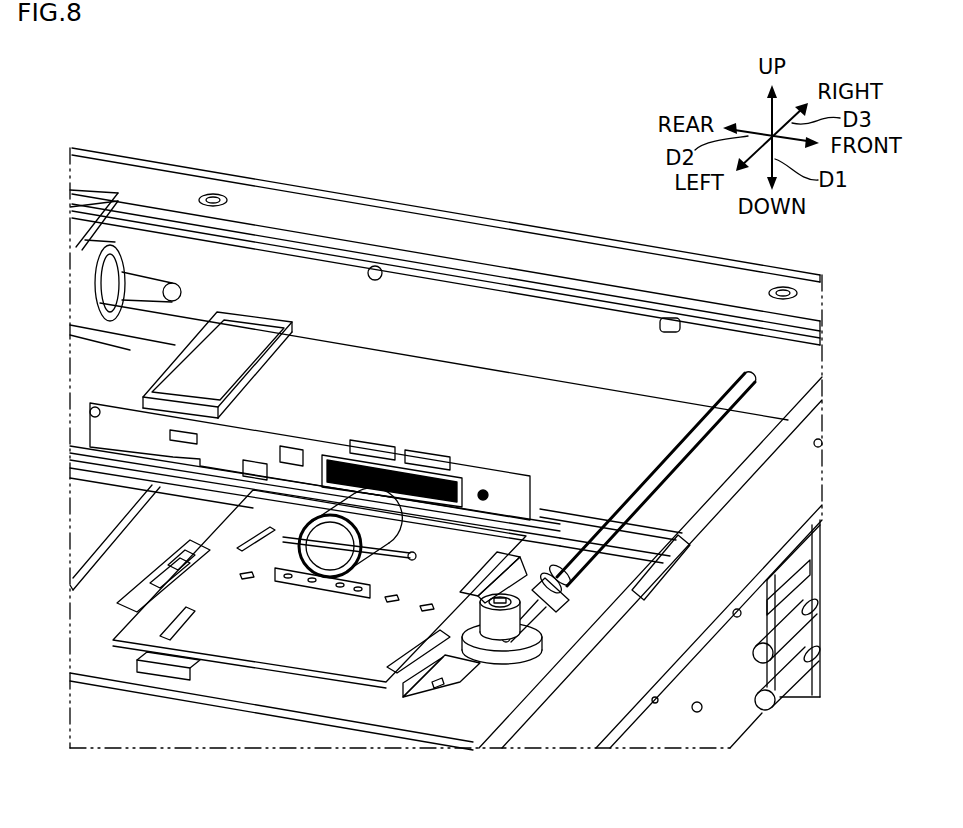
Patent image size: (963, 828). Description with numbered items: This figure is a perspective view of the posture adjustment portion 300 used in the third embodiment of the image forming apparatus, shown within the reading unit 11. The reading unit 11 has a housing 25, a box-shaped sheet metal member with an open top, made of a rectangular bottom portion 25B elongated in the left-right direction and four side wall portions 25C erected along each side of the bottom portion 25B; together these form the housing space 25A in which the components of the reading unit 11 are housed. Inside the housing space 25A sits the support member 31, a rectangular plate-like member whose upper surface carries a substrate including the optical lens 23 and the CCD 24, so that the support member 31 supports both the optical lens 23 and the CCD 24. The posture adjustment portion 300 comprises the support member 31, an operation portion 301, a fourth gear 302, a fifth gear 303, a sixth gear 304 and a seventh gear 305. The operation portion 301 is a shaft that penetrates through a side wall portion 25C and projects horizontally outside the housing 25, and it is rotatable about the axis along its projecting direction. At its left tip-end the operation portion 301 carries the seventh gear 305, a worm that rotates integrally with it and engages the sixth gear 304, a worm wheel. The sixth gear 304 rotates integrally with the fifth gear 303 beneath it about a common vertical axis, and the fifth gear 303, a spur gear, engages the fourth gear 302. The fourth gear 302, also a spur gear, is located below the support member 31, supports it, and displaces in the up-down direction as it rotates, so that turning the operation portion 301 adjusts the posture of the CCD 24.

The reading unit 11 is at (487, 172).
The housing 25 is at (390, 230).
The housing space 25A is at (502, 318).
The bottom portion 25B is at (132, 577).
The side wall portion 25C is at (587, 350).
The support member 31 is at (228, 595).
The optical lens 23 is at (332, 550).
The charge coupled device (CCD) 24 is at (428, 488).
The posture adjustment portion 300 is at (586, 591).
The operation portion 301 is at (680, 457).
The fourth gear 302 is at (452, 635).
The fifth gear 303 is at (533, 643).
The sixth gear 304 is at (473, 613).
The seventh gear 305 is at (548, 614).